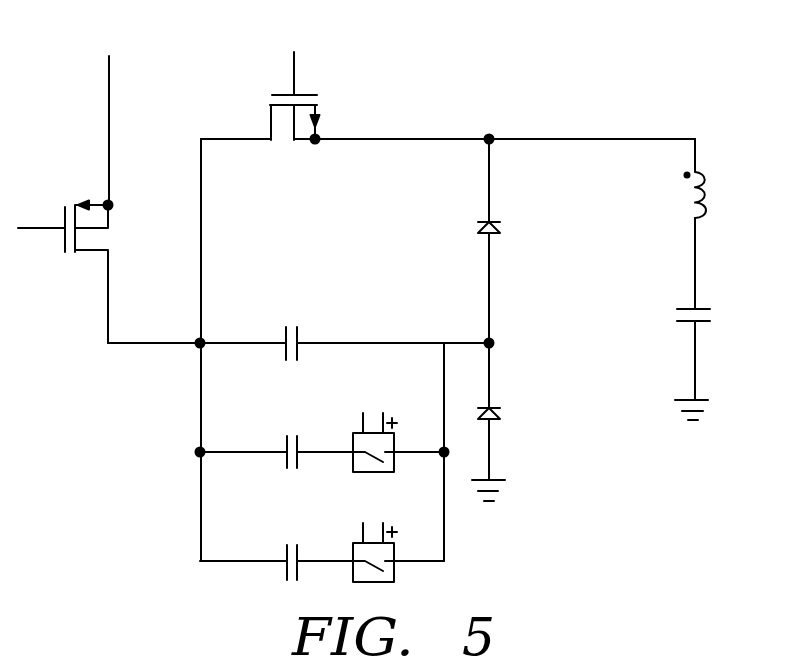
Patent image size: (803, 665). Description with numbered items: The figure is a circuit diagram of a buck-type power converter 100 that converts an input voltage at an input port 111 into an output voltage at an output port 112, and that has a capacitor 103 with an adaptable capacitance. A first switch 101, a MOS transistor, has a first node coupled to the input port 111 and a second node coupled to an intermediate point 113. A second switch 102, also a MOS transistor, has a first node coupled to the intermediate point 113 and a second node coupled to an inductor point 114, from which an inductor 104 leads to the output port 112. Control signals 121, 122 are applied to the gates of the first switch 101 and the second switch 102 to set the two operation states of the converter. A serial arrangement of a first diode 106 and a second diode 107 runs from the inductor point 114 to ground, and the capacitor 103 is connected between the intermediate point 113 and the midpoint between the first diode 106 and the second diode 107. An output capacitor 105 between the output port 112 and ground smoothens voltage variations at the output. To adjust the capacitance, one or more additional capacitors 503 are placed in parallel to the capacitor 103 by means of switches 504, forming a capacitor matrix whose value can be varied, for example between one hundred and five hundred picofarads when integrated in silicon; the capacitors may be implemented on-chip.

The power converter 100 is at (622, 52).
The first switch 101 is at (100, 238).
The second switch 102 is at (283, 125).
The capacitor 103 is at (284, 340).
The inductor 104 is at (690, 197).
The output capacitor 105 is at (690, 307).
The first diode 106 is at (495, 218).
The second diode 107 is at (495, 404).
The input port 111 is at (109, 68).
The output port 112 is at (694, 250).
The intermediate point 113 is at (198, 342).
The inductor point 114 is at (489, 132).
The control signal 121 is at (37, 228).
The control signal 122 is at (294, 65).
The additional capacitor 503 is at (284, 447).
The switch 504 is at (374, 415).